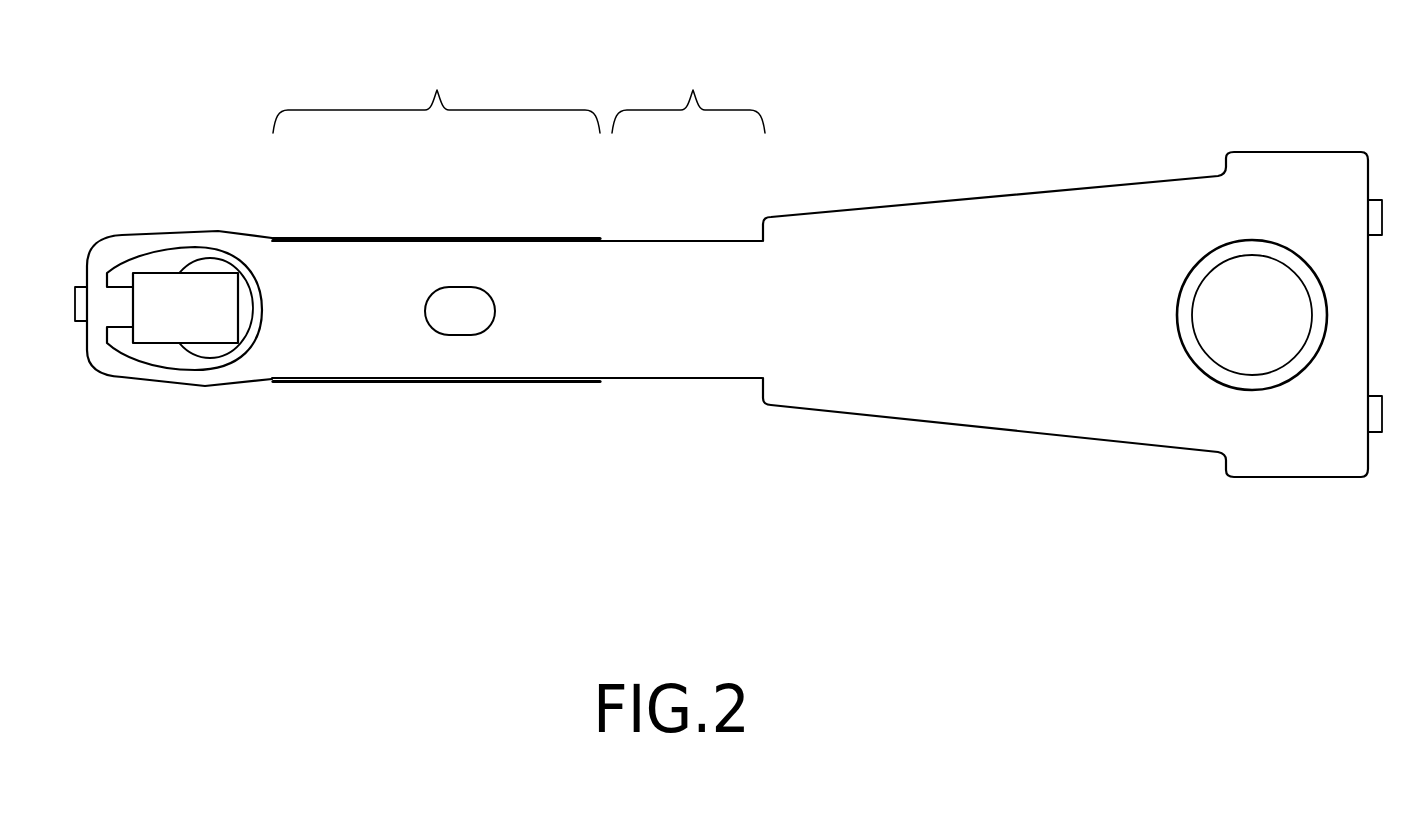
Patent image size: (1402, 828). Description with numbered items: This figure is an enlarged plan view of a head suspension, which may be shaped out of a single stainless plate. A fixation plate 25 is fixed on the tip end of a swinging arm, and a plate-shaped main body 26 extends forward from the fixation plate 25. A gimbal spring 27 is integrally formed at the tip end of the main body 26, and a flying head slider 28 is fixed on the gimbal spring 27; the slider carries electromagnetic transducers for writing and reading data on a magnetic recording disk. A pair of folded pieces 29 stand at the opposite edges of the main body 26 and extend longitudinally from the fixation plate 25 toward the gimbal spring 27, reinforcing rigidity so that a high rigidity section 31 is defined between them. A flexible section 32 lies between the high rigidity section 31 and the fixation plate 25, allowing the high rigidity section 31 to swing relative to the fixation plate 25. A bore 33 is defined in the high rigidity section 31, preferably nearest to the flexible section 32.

The fixation plate 25 is at (1143, 447).
The main body 26 is at (635, 448).
The gimbal spring 27 is at (170, 353).
The flying head slider 28 is at (157, 272).
The folded pieces 29 is at (450, 239).
The high rigidity section 31 is at (436, 87).
The flexible section 32 is at (688, 87).
The bore 33 is at (430, 301).